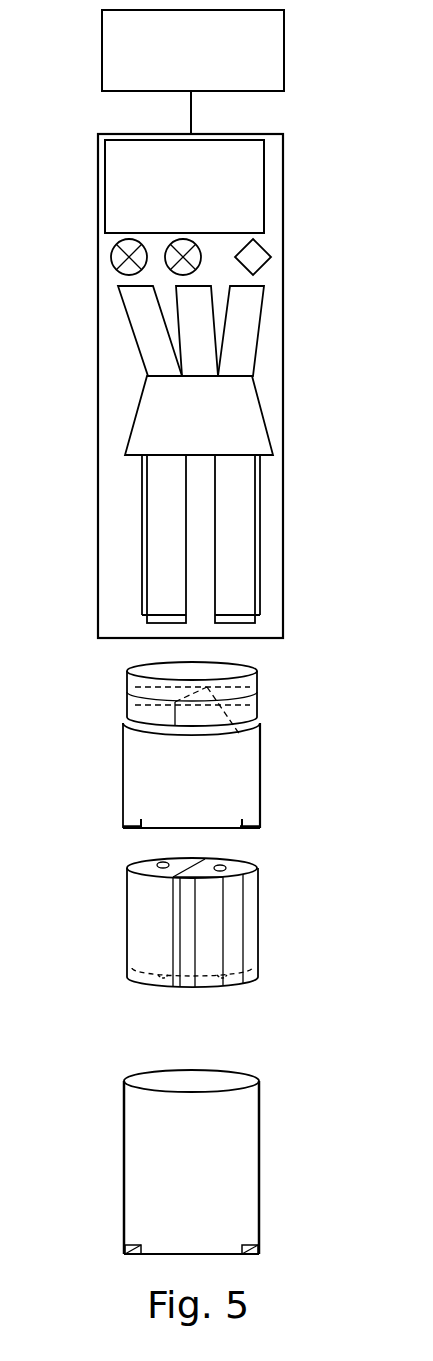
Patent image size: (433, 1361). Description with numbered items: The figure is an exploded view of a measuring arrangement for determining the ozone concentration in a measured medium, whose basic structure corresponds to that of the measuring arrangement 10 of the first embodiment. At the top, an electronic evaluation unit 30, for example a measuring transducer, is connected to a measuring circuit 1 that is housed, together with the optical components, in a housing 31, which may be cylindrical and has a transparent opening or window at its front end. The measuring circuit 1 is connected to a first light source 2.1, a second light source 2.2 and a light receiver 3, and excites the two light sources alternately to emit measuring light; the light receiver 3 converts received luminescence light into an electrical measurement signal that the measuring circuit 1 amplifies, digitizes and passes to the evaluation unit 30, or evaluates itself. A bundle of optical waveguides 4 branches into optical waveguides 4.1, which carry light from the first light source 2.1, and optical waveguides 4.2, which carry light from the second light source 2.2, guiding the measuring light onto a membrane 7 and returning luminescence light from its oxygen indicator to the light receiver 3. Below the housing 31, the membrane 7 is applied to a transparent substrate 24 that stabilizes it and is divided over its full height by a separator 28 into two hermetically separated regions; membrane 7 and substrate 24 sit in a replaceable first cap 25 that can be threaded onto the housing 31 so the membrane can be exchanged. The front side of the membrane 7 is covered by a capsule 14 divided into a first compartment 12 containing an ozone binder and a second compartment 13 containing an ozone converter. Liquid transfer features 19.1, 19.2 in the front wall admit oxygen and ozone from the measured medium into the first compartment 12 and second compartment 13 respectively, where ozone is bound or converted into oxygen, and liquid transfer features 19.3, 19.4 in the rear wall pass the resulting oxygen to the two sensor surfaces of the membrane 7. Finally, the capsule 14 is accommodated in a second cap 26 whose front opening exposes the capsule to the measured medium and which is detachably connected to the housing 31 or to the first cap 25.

The electronic evaluation unit 30 is at (207, 64).
The measuring arrangement 10 is at (302, 383).
The measuring circuit 1 is at (200, 194).
The first light source 2.1 is at (112, 257).
The second light source 2.2 is at (182, 268).
The light receiver 3 is at (268, 262).
The optical waveguides 4 is at (145, 324).
The housing 31 is at (285, 418).
The optical waveguides 4.1 is at (157, 526).
The optical waveguides 4.2 is at (238, 535).
The substrate 24 is at (247, 682).
The membrane 7 is at (248, 703).
The separator 28 is at (217, 723).
The first cap 25 is at (123, 747).
The capsule 14 is at (258, 947).
The first compartment 12 is at (145, 918).
The second compartment 13 is at (238, 920).
The liquid transfer feature 19.1 is at (162, 987).
The liquid transfer feature 19.2 is at (222, 987).
The liquid transfer feature 19.3 is at (160, 863).
The liquid transfer feature 19.4 is at (226, 861).
The second cap 26 is at (124, 1136).